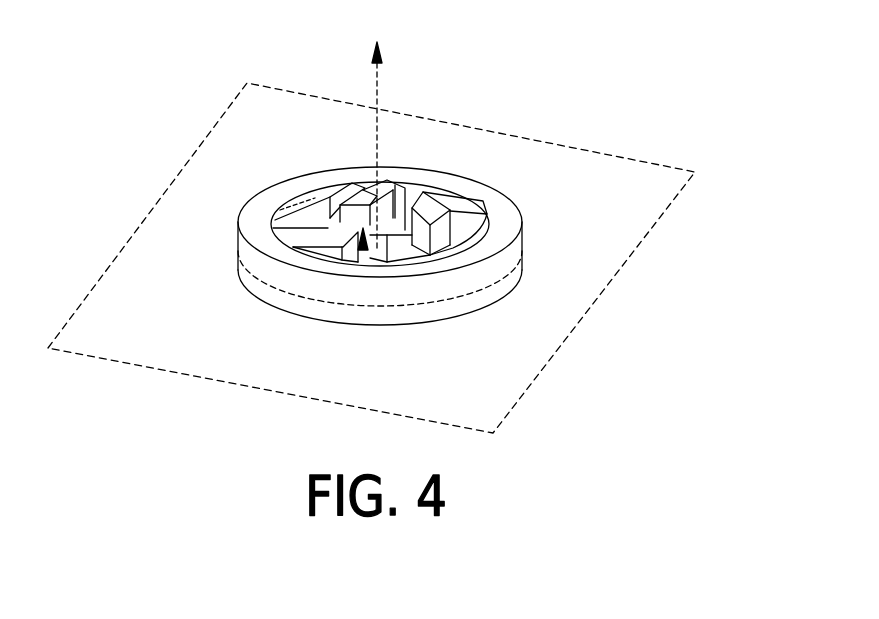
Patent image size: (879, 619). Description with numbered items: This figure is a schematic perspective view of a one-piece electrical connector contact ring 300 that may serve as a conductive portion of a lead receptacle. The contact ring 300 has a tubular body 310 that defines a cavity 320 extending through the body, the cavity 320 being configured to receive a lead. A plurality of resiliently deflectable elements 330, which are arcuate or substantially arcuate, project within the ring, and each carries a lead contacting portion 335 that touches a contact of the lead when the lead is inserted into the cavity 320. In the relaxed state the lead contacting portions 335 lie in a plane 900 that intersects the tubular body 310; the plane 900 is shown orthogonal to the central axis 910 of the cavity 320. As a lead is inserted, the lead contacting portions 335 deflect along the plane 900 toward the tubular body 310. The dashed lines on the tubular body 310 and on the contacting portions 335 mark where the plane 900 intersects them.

The contact ring 300 is at (353, 203).
The tubular body 310 is at (460, 183).
The cavity 320 is at (400, 227).
The resiliently deflectable element 330 is at (307, 238).
The lead contacting portion 335 is at (363, 250).
The plane 900 is at (152, 323).
The central axis 910 is at (378, 133).